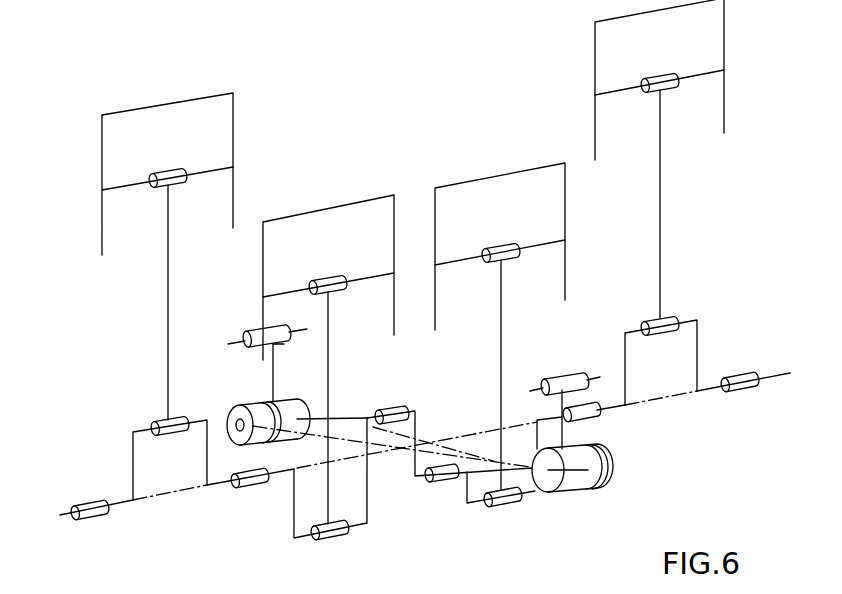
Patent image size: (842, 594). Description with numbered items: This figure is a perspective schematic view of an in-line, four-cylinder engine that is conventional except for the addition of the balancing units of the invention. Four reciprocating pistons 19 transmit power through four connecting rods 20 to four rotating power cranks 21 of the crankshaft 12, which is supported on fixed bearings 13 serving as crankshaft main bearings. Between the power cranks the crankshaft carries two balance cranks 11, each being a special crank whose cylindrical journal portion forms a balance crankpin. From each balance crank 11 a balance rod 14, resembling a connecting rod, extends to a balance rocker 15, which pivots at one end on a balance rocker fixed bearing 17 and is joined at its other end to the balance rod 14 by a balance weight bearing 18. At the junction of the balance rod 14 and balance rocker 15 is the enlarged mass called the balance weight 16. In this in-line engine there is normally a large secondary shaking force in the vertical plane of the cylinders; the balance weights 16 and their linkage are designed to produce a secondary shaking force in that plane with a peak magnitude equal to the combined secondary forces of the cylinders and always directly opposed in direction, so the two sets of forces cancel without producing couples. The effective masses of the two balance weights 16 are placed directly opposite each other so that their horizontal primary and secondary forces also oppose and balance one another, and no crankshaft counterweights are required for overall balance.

The balance crank 11 is at (418, 415).
The crankshaft 12 is at (133, 502).
The fixed bearing 13 is at (88, 518).
The balance rod 14 is at (345, 415).
The balance rocker 15 is at (276, 378).
The balance weight 16 is at (262, 401).
The balance rocker fixed bearing 17 is at (247, 336).
The balance weight bearing 18 is at (226, 425).
The piston 19 is at (233, 183).
The connecting rod 20 is at (168, 292).
The power crank 21 is at (133, 440).